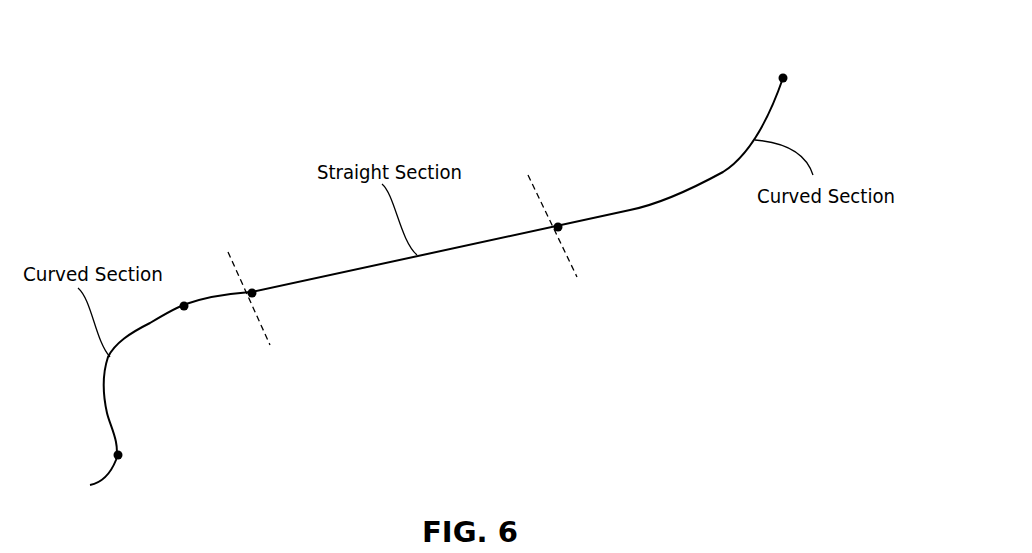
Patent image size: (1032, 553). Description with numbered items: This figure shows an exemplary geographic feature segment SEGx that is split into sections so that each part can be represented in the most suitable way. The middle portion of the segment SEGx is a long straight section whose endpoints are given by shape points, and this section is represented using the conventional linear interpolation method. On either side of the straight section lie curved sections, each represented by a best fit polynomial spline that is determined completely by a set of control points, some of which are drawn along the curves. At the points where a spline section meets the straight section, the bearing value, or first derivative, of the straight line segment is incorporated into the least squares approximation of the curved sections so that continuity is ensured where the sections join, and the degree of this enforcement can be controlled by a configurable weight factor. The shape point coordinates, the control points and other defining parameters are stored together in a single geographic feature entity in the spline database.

The geographic feature segment SEGx is at (485, 345).